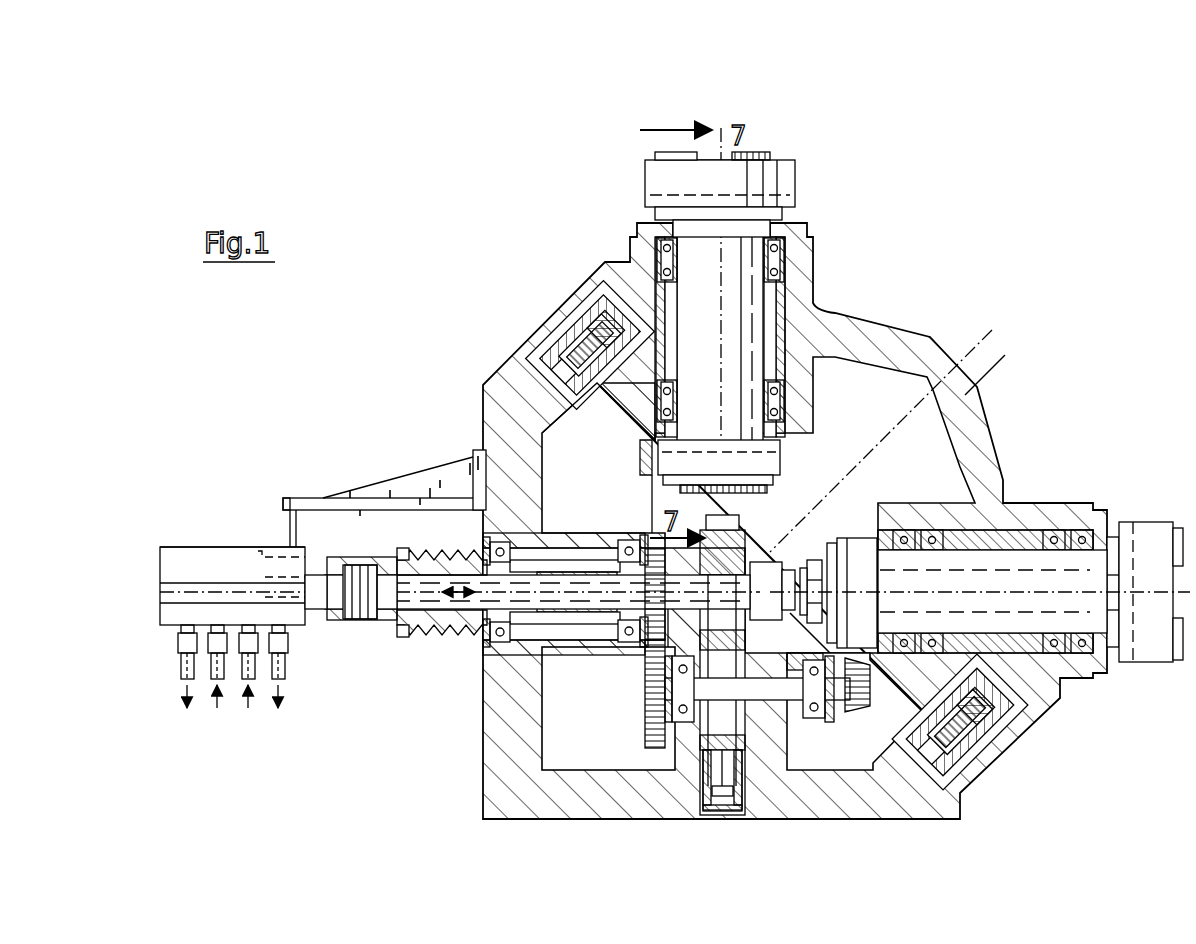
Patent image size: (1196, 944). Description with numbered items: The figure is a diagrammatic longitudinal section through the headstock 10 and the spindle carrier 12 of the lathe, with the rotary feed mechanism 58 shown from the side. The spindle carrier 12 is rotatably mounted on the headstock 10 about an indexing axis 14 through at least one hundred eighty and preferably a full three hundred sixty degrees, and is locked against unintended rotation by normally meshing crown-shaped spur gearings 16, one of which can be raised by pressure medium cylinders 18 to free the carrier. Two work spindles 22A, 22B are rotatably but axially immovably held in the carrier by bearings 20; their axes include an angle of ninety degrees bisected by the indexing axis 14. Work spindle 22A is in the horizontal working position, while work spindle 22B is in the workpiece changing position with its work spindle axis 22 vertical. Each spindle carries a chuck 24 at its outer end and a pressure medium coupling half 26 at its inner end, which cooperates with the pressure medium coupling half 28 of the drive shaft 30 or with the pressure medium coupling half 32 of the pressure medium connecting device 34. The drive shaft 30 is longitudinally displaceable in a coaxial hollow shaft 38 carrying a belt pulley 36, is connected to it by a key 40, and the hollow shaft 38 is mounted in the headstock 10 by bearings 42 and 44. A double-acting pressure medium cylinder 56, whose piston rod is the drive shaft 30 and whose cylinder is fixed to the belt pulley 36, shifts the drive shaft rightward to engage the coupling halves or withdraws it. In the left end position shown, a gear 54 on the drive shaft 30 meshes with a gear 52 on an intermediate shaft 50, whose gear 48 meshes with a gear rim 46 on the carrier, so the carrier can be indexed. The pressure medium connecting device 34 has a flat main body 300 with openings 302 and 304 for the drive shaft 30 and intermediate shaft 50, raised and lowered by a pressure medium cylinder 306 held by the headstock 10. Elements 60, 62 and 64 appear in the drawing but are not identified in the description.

The headstock 10 is at (480, 708).
The spindle carrier 12 is at (905, 325).
The indexing axis 14 is at (985, 366).
The crown-shaped spur gearings 16 is at (545, 352).
The pressure medium cylinders 18 is at (583, 320).
The bearings 20 is at (677, 250).
The work spindle axis 22 is at (800, 447).
The work spindle 22A is at (1000, 535).
The work spindle 22B is at (735, 307).
The chuck 24 is at (790, 190).
The pressure medium coupling half 26 is at (780, 485).
The pressure medium coupling half 28 is at (812, 556).
The drive shaft 30 is at (385, 597).
The pressure medium coupling half 32 is at (748, 532).
The pressure medium connecting device 34 is at (740, 735).
The belt pulley 36 is at (443, 625).
The hollow shaft 38 is at (522, 645).
The key 40 is at (573, 562).
The bearing 42 is at (628, 645).
The bearing 44 is at (500, 545).
The gear rim 46 is at (630, 450).
The gear 48 is at (858, 715).
The intermediate shaft 50 is at (770, 697).
The gear 52 is at (650, 720).
The gear 54 is at (655, 575).
The double-acting pressure medium cylinder 56 is at (360, 553).
The rotary feed mechanism 58 is at (198, 545).
The valve block 60 is at (173, 555).
The bracket 62 is at (292, 520).
The passage 64 is at (265, 553).
The main body 300 is at (735, 645).
The opening 302 is at (660, 525).
The opening 304 is at (650, 742).
The pressure medium cylinder 306 is at (746, 802).